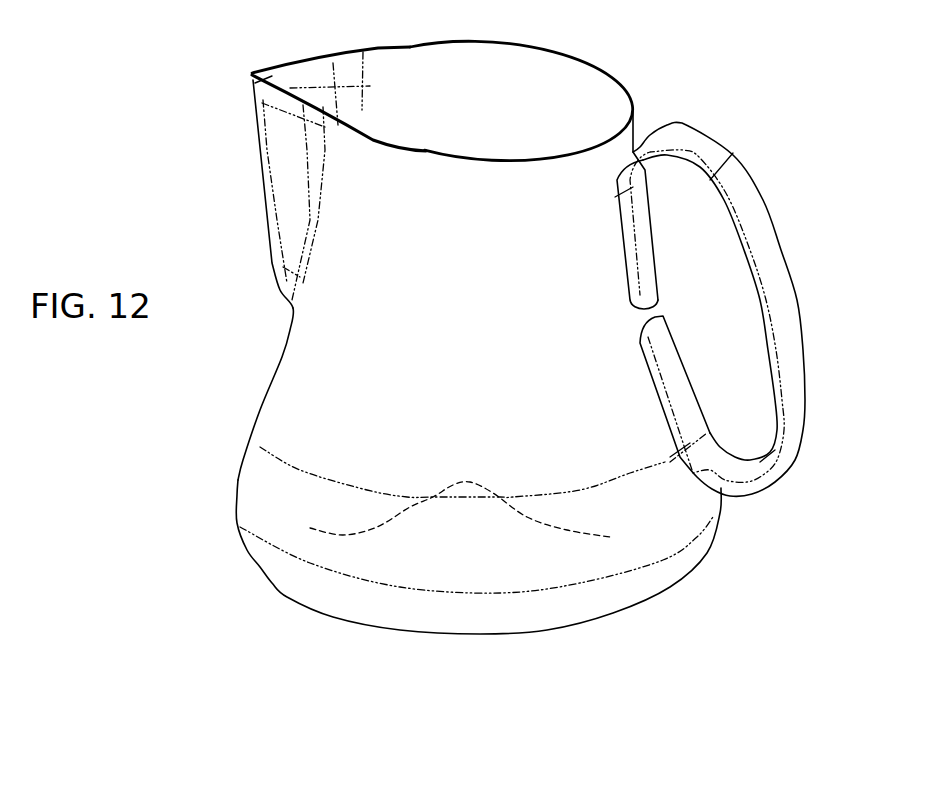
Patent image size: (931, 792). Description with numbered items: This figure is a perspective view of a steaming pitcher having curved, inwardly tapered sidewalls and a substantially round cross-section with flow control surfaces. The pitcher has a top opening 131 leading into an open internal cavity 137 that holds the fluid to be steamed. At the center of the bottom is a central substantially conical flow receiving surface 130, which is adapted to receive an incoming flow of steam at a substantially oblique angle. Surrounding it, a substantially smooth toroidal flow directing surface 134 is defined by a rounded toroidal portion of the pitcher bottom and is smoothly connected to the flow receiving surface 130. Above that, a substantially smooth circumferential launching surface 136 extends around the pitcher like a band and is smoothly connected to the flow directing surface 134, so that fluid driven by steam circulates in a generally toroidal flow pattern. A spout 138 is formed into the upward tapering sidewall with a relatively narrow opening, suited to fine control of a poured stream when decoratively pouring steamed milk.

The central substantially conical flow receiving surface 130 is at (527, 517).
The top opening 131 is at (463, 78).
The toroidal flow directing surface 134 is at (258, 568).
The circumferential launching surface 136 is at (258, 447).
The open internal cavity 137 is at (425, 411).
The spout 138 is at (275, 97).